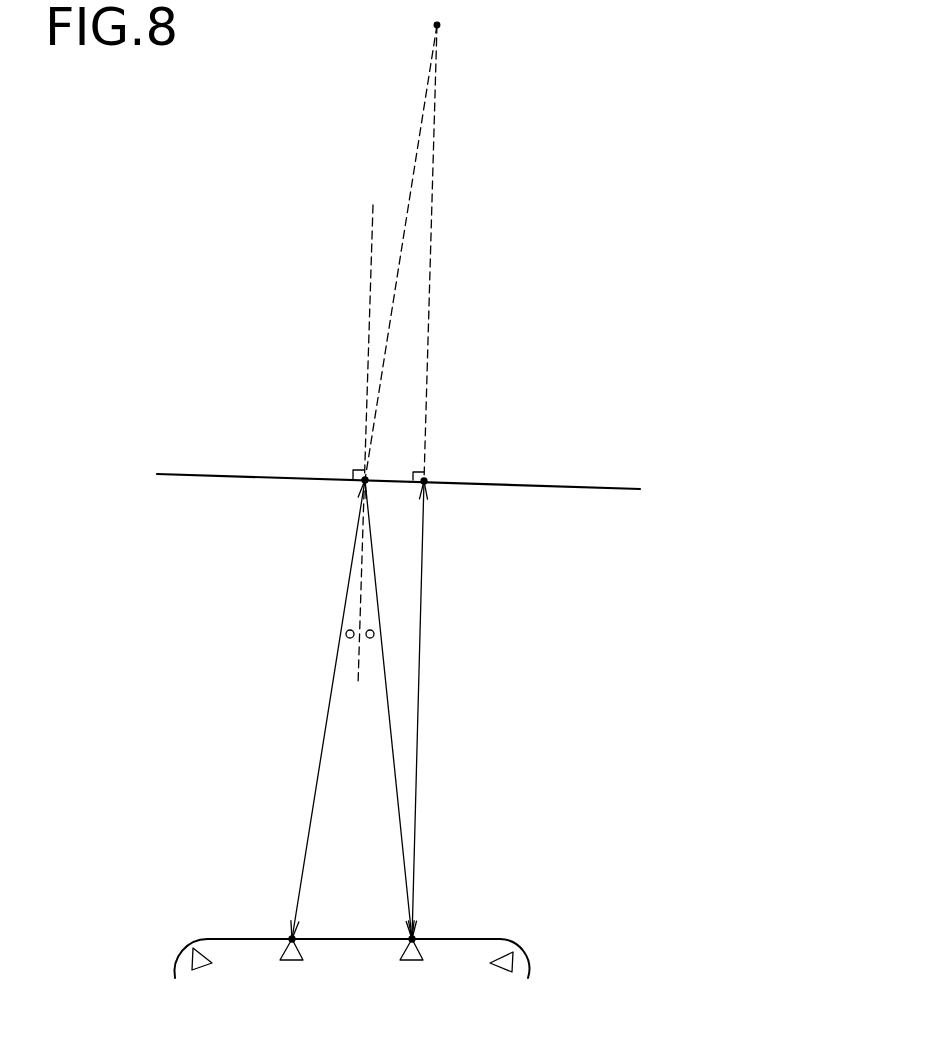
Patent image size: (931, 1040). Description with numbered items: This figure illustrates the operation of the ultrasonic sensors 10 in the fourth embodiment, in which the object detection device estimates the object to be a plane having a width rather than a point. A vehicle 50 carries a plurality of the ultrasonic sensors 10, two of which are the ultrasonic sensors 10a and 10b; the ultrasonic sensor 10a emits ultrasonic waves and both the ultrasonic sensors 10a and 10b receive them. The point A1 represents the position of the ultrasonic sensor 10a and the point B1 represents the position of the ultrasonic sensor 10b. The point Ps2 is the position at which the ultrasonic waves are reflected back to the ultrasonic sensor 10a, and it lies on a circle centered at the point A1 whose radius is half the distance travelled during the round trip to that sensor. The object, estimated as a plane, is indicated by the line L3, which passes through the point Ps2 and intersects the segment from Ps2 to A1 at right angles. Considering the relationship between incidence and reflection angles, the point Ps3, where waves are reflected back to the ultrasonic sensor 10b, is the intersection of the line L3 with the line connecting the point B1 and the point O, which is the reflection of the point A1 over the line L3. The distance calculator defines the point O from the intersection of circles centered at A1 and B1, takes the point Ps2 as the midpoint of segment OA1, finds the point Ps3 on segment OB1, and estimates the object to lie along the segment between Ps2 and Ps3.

The ultrasonic sensor 10 is at (205, 978).
The ultrasonic sensor 10a is at (412, 960).
The ultrasonic sensor 10b is at (293, 960).
The vehicle 50 is at (500, 940).
The point O is at (437, 25).
The point Ps3 is at (365, 480).
The point Ps2 is at (424, 481).
The line L3 is at (547, 485).
The point A1 is at (412, 939).
The point B1 is at (292, 939).